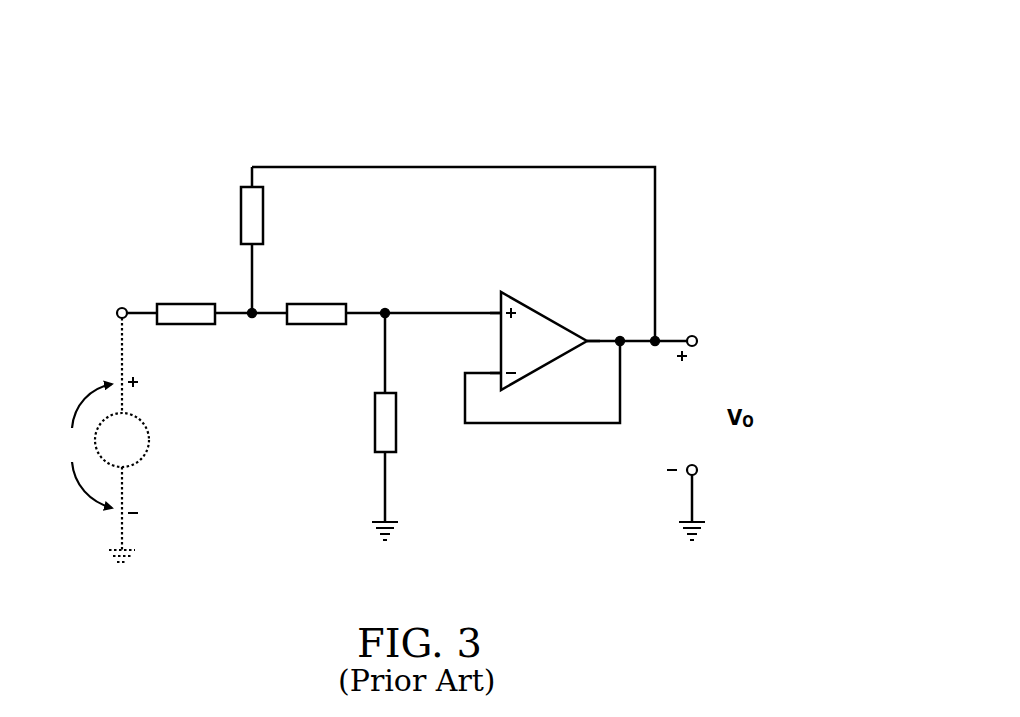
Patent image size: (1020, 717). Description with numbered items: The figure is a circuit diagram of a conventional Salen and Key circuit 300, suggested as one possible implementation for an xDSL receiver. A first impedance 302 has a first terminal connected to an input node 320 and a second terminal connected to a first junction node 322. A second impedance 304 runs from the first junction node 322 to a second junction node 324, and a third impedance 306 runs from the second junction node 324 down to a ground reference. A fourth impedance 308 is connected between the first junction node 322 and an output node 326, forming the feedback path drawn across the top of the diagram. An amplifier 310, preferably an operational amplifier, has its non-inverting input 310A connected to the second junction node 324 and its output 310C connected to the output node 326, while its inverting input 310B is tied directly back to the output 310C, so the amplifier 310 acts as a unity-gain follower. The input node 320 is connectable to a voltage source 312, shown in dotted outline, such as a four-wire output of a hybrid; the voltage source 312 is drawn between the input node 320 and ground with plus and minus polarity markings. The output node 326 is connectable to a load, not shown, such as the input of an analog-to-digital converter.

The Salen and Key circuit 300 is at (240, 80).
The first impedance 302 is at (182, 325).
The second impedance 304 is at (303, 325).
The third impedance 306 is at (397, 436).
The fourth impedance 308 is at (263, 236).
The amplifier 310 is at (538, 309).
The non-inverting input 310A is at (495, 310).
The inverting input 310B is at (495, 371).
The output 310C is at (586, 339).
The voltage source 312 is at (150, 440).
The input node 320 is at (124, 307).
The first junction node 322 is at (252, 318).
The second junction node 324 is at (386, 308).
The output node 326 is at (694, 335).